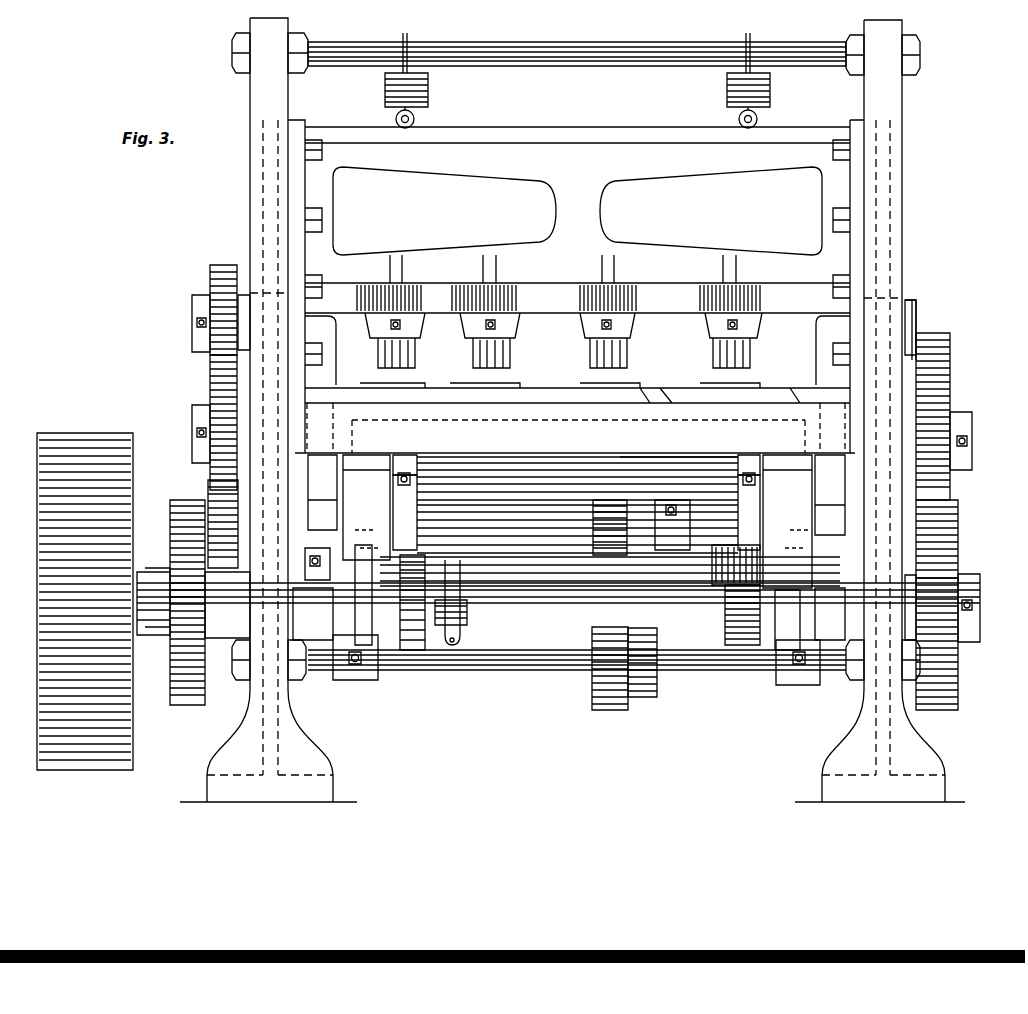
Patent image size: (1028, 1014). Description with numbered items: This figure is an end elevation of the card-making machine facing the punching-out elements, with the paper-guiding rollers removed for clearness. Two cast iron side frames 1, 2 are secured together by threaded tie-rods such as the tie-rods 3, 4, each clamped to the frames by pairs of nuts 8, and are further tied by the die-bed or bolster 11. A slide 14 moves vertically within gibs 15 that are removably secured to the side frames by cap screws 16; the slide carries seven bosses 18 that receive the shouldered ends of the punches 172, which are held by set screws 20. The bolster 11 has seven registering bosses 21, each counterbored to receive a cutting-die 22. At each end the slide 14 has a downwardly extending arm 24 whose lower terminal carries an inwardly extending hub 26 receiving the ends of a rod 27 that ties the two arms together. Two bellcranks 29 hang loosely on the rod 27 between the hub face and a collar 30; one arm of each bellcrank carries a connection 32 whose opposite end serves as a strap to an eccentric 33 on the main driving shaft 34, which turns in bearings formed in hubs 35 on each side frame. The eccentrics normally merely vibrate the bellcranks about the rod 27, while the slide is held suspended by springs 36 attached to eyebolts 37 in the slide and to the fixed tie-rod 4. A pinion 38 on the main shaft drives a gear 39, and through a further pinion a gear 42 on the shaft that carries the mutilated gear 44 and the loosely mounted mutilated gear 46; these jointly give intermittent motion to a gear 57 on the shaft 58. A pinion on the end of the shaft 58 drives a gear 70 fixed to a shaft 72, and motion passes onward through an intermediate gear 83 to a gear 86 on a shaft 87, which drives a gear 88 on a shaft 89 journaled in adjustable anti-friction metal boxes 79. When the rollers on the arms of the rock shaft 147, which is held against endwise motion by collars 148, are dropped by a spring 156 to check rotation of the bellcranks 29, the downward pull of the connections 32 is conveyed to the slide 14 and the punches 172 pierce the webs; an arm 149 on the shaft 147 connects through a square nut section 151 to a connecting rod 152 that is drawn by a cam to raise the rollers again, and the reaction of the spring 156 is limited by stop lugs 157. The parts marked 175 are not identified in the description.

The side frame 1 is at (268, 410).
The side frame 2 is at (880, 411).
The tie-rod 3 is at (500, 667).
The tie-rod 4 is at (586, 66).
The nuts 8 is at (232, 42).
The die-bed or bolster 11 is at (575, 428).
The slide 14 is at (577, 234).
The gibs 15 is at (300, 125).
The cap screws 16 is at (322, 156).
The bosses 18 is at (420, 328).
The set screws 20 is at (635, 328).
The bosses 21 is at (655, 394).
The cutting-die 22 is at (366, 384).
The downwardly extending arms 24 is at (336, 348).
The hub 26 is at (576, 495).
The rod 27 is at (470, 470).
The bellcranks 29 is at (577, 521).
The collar 30 is at (404, 462).
The connection 32 is at (576, 511).
The eccentric 33 is at (422, 645).
The main driving shaft 34 is at (990, 594).
The hubs 35 is at (560, 606).
The springs 36 is at (428, 88).
The eyebolts 37 is at (414, 120).
The pinion 38 is at (958, 576).
The gear 39 is at (958, 522).
The gear 42 is at (176, 515).
The gear 44 is at (592, 692).
The gear 46 is at (657, 690).
The gear 57 is at (642, 457).
The shaft 58 is at (522, 518).
The gear 70 is at (936, 340).
The shaft 72 is at (972, 442).
The anti-friction metal boxes 79 is at (912, 300).
The intermediate gear 83 is at (216, 506).
The gear 86 is at (216, 398).
The shaft 87 is at (192, 436).
The gear 88 is at (222, 268).
The shaft 89 is at (192, 322).
The rock shaft 147 is at (552, 565).
The collars 148 is at (316, 580).
The arm 149 is at (467, 614).
The square nut section 151 is at (462, 630).
The connecting rod 152 is at (452, 646).
The spring 156 is at (712, 556).
The stop lugs 157 is at (580, 597).
The punches 172 is at (415, 358).
The marks 175 is at (357, 530).